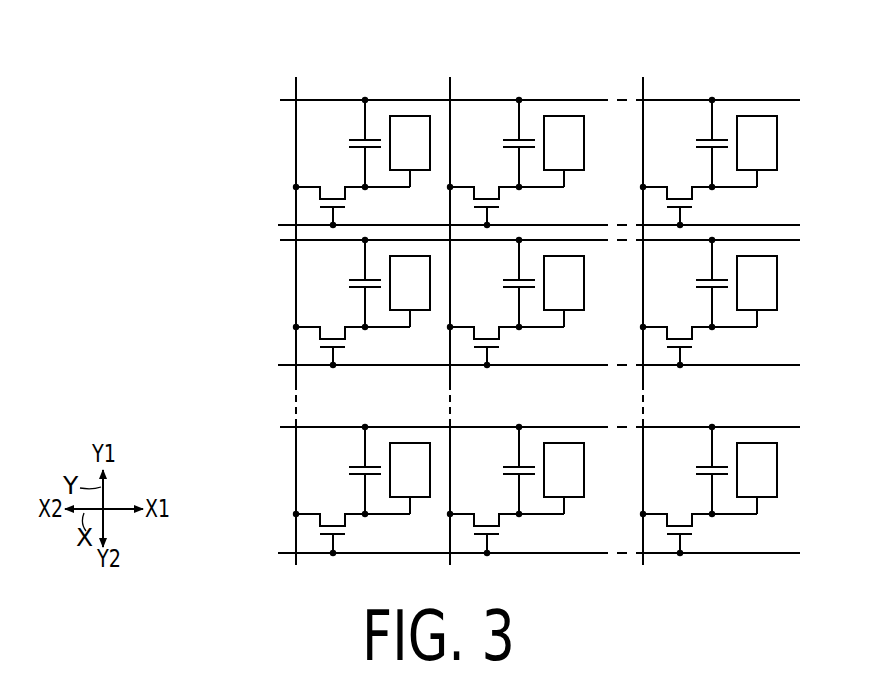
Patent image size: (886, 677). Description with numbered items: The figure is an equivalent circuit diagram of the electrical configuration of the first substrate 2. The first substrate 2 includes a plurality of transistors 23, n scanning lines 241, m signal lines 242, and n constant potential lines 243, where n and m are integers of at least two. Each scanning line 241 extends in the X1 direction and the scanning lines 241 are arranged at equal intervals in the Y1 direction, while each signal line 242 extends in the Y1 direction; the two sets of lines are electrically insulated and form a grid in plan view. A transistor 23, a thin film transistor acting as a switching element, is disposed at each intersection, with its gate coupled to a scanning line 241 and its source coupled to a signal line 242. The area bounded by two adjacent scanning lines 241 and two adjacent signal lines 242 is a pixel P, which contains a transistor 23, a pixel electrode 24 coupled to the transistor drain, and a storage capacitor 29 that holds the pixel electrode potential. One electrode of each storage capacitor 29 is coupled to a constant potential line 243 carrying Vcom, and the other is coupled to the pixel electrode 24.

The first substrate 2 is at (806, 72).
The transistor 23 is at (357, 208).
The pixel electrode 24 is at (565, 116).
The storage capacitor 29 is at (346, 146).
The scanning line 241 is at (288, 552).
The signal line 242 is at (646, 93).
The constant potential line 243 is at (288, 427).
The pixel P is at (307, 148).